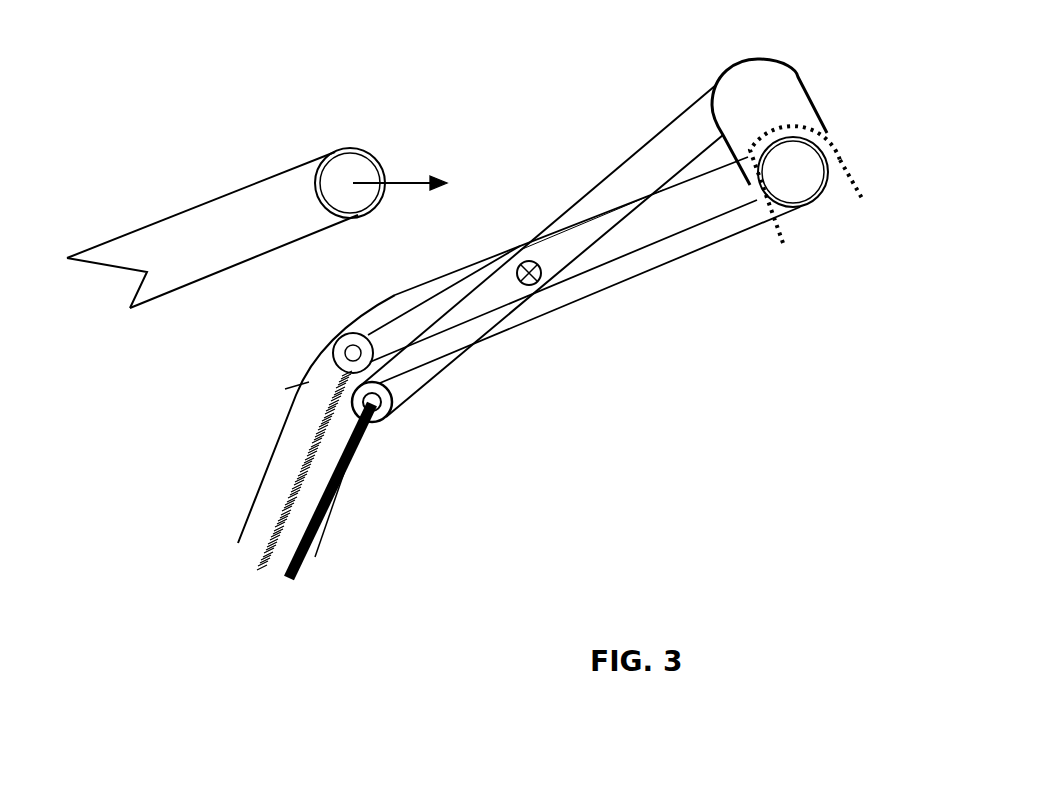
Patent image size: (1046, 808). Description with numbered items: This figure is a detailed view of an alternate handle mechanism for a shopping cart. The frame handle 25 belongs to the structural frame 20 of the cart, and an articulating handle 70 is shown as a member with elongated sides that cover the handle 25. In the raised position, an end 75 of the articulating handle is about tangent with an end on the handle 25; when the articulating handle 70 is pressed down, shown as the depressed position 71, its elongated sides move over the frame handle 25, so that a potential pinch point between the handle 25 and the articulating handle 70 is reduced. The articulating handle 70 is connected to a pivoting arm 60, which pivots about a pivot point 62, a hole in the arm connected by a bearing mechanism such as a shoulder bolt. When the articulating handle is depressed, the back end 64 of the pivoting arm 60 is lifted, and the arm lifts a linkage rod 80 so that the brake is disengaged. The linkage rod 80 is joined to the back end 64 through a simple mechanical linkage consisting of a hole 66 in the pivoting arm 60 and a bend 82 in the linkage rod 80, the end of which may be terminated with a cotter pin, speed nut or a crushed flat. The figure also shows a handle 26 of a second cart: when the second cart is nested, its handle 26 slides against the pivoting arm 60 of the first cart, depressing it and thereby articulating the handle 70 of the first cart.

The frame 20 is at (325, 548).
The handle 25 is at (812, 207).
The handle 26 is at (203, 205).
The pivoting arm 60 is at (623, 158).
The pivot point 62 is at (516, 262).
The back end of the pivot arm 64 is at (455, 370).
The hole 66 is at (395, 410).
The articulating handle 70 is at (813, 92).
The articulating handle in down position 71 is at (848, 172).
The end of the articulating handle 75 is at (838, 128).
The linkage rod 80 is at (337, 500).
The bend in the linkage rod 82 is at (393, 417).